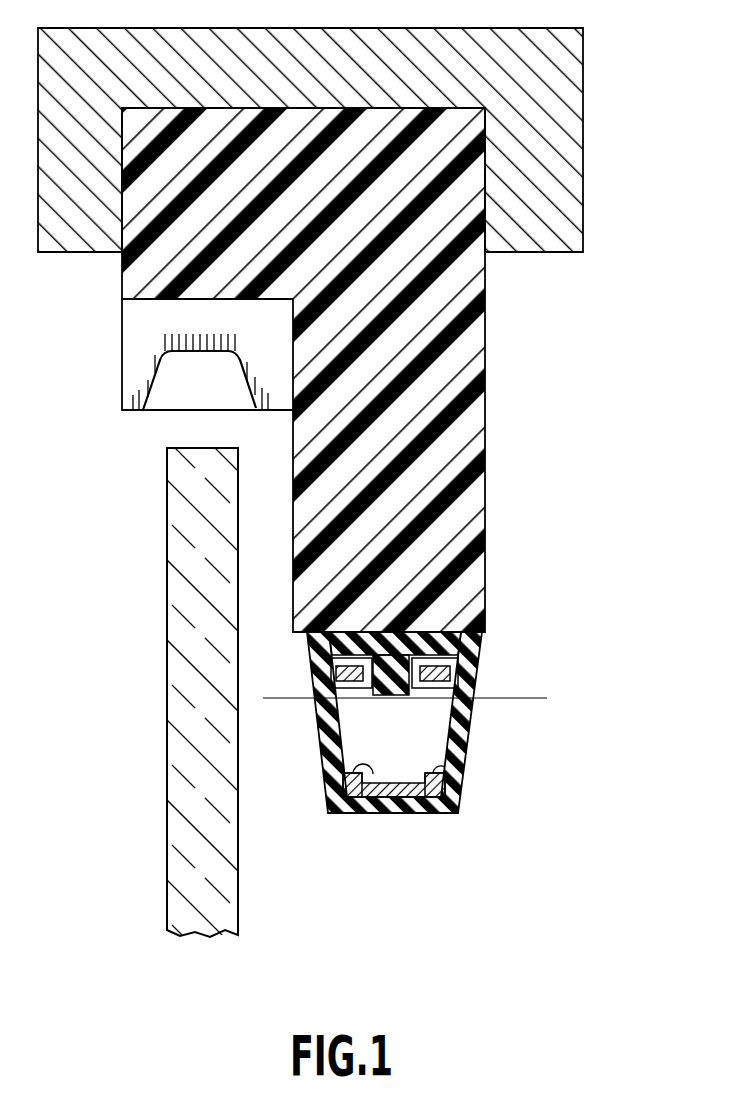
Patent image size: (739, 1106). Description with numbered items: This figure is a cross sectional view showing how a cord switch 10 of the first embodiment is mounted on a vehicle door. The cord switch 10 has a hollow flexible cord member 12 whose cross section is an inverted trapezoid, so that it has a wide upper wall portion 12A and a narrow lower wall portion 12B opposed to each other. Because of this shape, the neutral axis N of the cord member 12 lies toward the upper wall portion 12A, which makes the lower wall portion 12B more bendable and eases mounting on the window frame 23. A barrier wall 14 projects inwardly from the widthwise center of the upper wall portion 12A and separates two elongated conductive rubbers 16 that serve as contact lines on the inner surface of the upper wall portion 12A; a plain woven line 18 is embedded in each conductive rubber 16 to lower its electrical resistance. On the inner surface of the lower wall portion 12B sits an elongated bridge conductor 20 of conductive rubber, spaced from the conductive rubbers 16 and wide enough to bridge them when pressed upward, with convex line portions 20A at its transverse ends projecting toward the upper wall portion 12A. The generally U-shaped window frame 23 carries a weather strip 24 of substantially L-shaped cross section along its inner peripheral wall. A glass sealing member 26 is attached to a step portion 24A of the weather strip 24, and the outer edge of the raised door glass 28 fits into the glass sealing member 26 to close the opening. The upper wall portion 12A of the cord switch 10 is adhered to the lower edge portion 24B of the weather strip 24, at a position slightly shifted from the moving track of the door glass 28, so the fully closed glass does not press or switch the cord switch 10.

The cord switch 10 is at (436, 733).
The cord member 12 is at (462, 788).
The upper wall portion 12A is at (447, 632).
The lower wall portion 12B is at (403, 813).
The barrier wall 14 is at (403, 697).
The conductive rubbers 16 is at (325, 670).
The plain woven line 18 is at (357, 688).
The bridge conductor 20 is at (399, 813).
The convex line portions 20A is at (446, 777).
The window frame 23 is at (583, 77).
The weather strip 24 is at (485, 331).
The step portion 24A is at (197, 298).
The lower edge portion 24B is at (307, 644).
The glass sealing member 26 is at (133, 363).
The door glass 28 is at (178, 507).
The neutral axis N is at (536, 694).